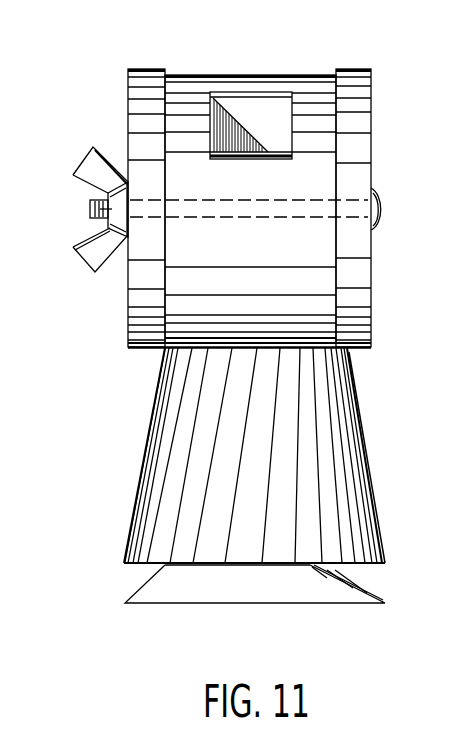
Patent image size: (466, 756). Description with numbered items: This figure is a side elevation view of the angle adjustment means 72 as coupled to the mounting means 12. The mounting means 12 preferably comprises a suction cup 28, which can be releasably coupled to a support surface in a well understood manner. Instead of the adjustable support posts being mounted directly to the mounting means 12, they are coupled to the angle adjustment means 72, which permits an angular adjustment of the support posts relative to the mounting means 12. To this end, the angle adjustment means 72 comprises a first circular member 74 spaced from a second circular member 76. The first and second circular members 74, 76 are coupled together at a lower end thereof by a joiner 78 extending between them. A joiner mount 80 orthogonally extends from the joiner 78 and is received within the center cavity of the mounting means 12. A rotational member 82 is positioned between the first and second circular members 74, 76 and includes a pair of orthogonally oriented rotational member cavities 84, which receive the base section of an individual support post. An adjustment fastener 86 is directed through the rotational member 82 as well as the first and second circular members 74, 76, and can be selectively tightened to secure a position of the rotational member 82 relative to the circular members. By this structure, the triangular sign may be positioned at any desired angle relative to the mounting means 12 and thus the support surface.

The mounting means 12 is at (190, 223).
The suction cup 28 is at (135, 598).
The angle adjustment means 72 is at (0, 167).
The first circular member 74 is at (148, 67).
The second circular member 76 is at (348, 67).
The joiner 78 is at (232, 347).
The joiner mount 80 is at (82, 455).
The rotational member 82 is at (237, 77).
The rotational member cavities 84 is at (253, 122).
The adjustment fastener 86 is at (93, 252).